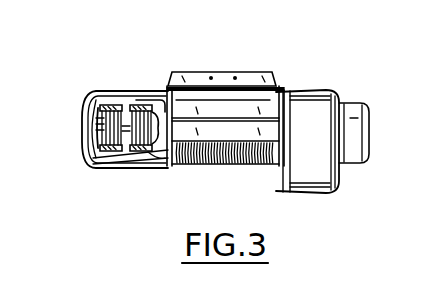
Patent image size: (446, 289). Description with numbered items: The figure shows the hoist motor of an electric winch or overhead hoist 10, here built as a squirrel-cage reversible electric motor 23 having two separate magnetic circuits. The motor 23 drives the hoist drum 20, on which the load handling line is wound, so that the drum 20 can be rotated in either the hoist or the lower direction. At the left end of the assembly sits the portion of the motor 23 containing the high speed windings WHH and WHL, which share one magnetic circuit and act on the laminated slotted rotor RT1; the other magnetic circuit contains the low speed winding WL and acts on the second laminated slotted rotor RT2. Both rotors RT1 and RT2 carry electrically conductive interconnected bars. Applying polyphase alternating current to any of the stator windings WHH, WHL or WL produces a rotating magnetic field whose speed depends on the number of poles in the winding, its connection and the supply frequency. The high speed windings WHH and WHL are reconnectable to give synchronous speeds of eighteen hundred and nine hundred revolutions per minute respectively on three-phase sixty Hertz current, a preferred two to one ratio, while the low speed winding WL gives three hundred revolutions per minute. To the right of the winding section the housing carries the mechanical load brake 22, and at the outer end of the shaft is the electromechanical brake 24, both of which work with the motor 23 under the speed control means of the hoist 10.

The electric winch or overhead hoist 10 is at (289, 64).
The hoist drum 20 is at (227, 158).
The mechanical load brake 22 is at (307, 102).
The electric motor 23 is at (118, 99).
The electromechanical brake 24 is at (364, 137).
The laminated slotted rotor RT1 is at (98, 121).
The laminated slotted rotor RT2 is at (160, 163).
The high speed winding WHH is at (102, 167).
The high speed winding WHL is at (108, 166).
The low speed winding WL is at (150, 96).